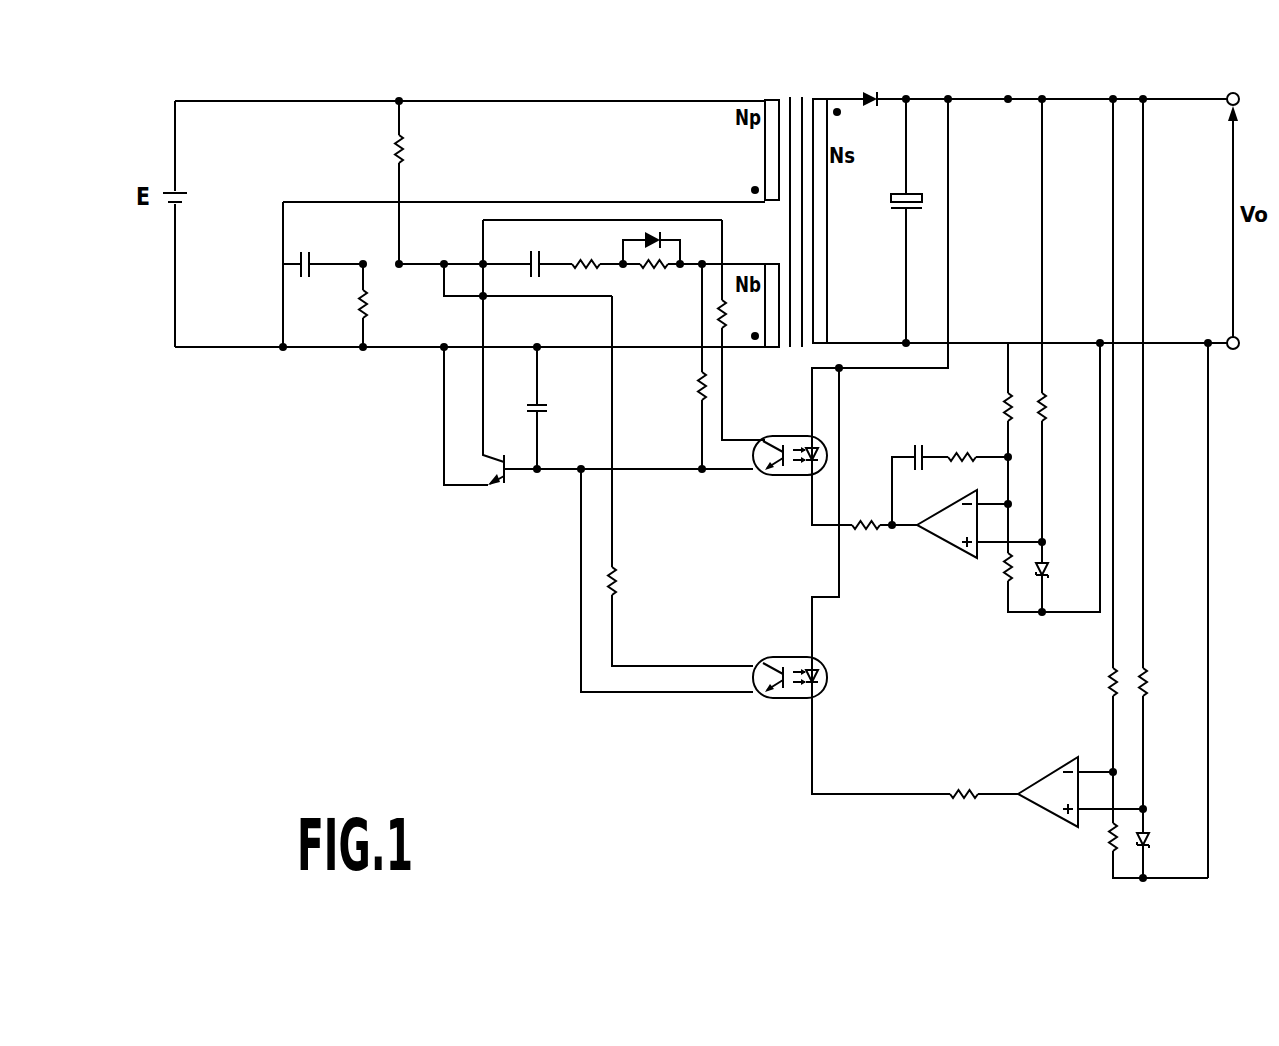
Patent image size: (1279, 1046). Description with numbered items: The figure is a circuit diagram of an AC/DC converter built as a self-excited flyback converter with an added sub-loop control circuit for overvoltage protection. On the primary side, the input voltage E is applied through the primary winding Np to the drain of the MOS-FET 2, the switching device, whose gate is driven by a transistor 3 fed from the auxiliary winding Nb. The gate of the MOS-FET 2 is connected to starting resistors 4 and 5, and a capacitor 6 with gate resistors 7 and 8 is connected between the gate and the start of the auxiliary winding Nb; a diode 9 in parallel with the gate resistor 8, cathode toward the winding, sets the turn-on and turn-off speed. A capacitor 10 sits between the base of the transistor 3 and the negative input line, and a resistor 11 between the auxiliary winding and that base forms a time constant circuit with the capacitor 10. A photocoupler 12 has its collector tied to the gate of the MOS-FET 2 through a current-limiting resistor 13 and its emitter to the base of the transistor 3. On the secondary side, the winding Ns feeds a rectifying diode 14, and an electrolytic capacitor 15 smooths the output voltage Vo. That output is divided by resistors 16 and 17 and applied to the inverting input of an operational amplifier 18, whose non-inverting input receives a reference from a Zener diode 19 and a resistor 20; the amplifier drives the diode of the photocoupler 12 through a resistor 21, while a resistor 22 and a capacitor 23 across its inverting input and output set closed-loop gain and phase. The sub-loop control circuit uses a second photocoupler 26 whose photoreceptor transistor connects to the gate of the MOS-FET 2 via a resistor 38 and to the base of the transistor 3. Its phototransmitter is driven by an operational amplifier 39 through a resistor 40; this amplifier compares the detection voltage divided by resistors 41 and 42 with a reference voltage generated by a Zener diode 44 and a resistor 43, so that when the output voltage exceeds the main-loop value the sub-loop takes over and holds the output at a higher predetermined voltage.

The MOS-FET 2 is at (308, 252).
The transistor 3 is at (500, 486).
The starting resistor 4 is at (393, 150).
The starting resistor 5 is at (370, 300).
The capacitor 6 is at (530, 252).
The gate resistor 7 is at (580, 258).
The gate resistor 8 is at (652, 270).
The diode 9 is at (655, 228).
The capacitor 10 is at (549, 408).
The resistor 11 is at (698, 384).
The photocoupler 12 is at (778, 478).
The resistor 13 is at (718, 312).
The rectifying diode 14 is at (870, 90).
The electrolytic capacitor 15 is at (900, 212).
The resistor 16 is at (1006, 400).
The resistor 17 is at (1004, 575).
The operational amplifier 18 is at (948, 545).
The Zener diode 19 is at (1050, 570).
The resistor 20 is at (1046, 403).
The resistor 21 is at (867, 535).
The resistor 22 is at (956, 455).
The capacitor 23 is at (914, 445).
The photocoupler 26 is at (790, 700).
The resistor 38 is at (618, 580).
The operational amplifier 39 is at (1045, 770).
The resistor 40 is at (965, 802).
The resistor 41 is at (1100, 680).
The resistor 42 is at (1106, 840).
The resistor 43 is at (1156, 683).
The Zener diode 44 is at (1155, 836).